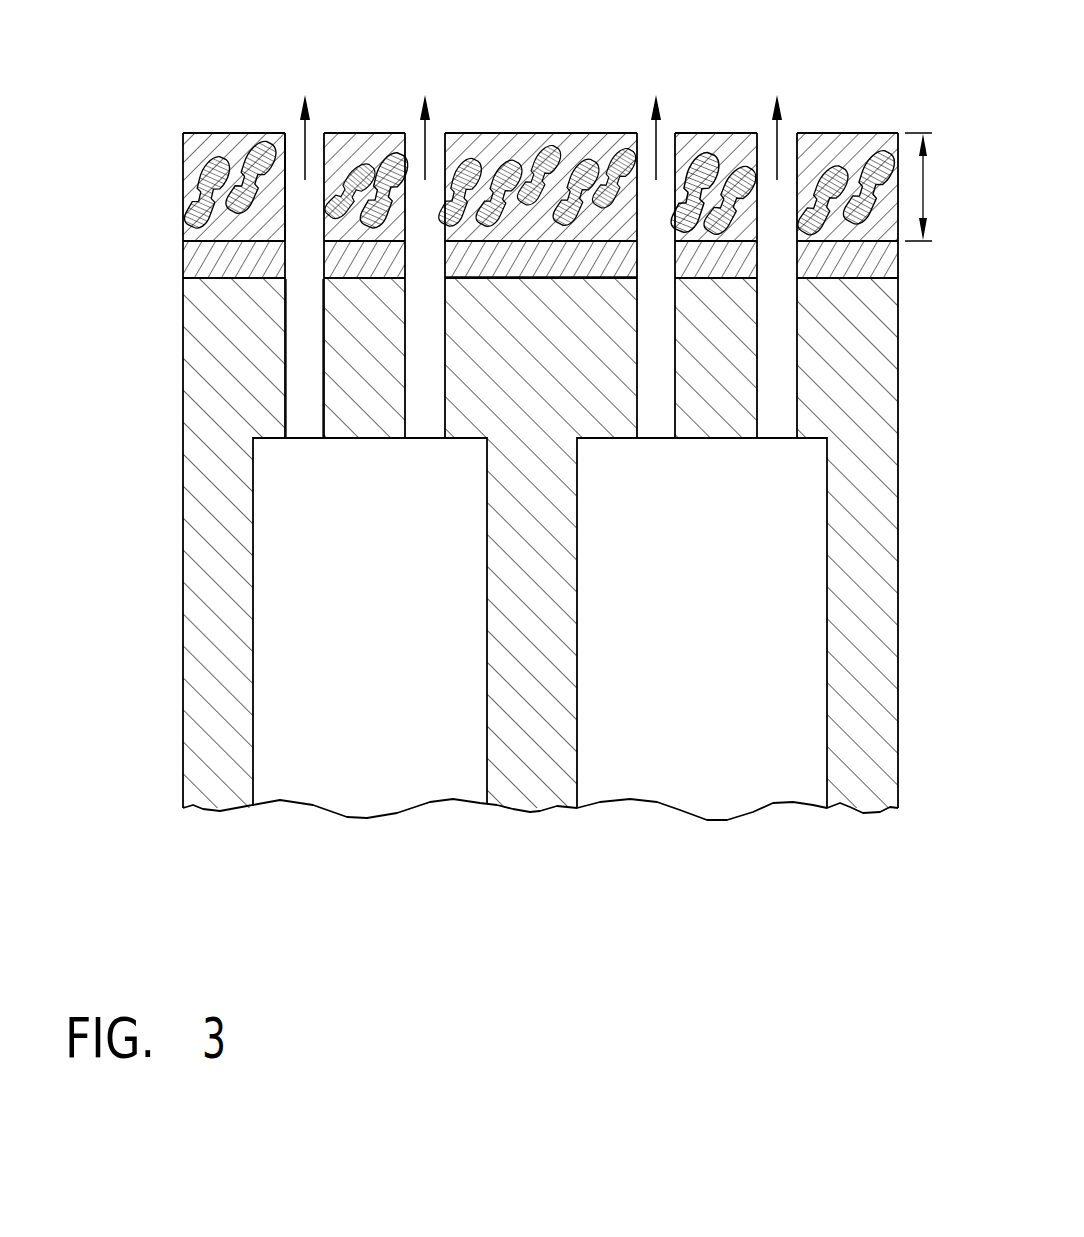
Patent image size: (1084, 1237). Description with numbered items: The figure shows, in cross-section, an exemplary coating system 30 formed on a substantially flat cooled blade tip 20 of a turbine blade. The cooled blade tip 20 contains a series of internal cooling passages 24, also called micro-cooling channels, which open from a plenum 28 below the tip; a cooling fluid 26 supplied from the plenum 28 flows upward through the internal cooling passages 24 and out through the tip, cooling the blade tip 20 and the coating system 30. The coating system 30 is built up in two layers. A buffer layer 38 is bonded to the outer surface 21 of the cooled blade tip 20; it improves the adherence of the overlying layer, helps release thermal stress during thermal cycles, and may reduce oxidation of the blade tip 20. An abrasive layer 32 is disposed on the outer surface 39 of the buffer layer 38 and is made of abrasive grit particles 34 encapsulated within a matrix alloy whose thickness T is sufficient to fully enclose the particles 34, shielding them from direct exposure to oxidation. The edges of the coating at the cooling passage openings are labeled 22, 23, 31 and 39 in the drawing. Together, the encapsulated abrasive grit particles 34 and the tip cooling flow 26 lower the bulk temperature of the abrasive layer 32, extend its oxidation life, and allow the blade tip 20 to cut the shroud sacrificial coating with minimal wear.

The cooled blade tip 20 is at (832, 328).
The outer surface of the cooled blade tip 21 is at (612, 275).
The cooling hole inlet 22 is at (298, 278).
The cooling hole outlet edge 23 is at (415, 133).
The internal cooling passages 24 is at (298, 388).
The cooling fluid 26 is at (306, 95).
The plenum 28 is at (386, 645).
The coating system 30 is at (499, 182).
The outer surface 31 is at (226, 133).
The abrasive layer 32 is at (534, 148).
The abrasive grit particles 34 is at (533, 148).
The buffer layer 38 is at (207, 270).
The outer surface of the buffer layer 39 is at (253, 165).
The thickness of the matrix alloy T is at (923, 185).